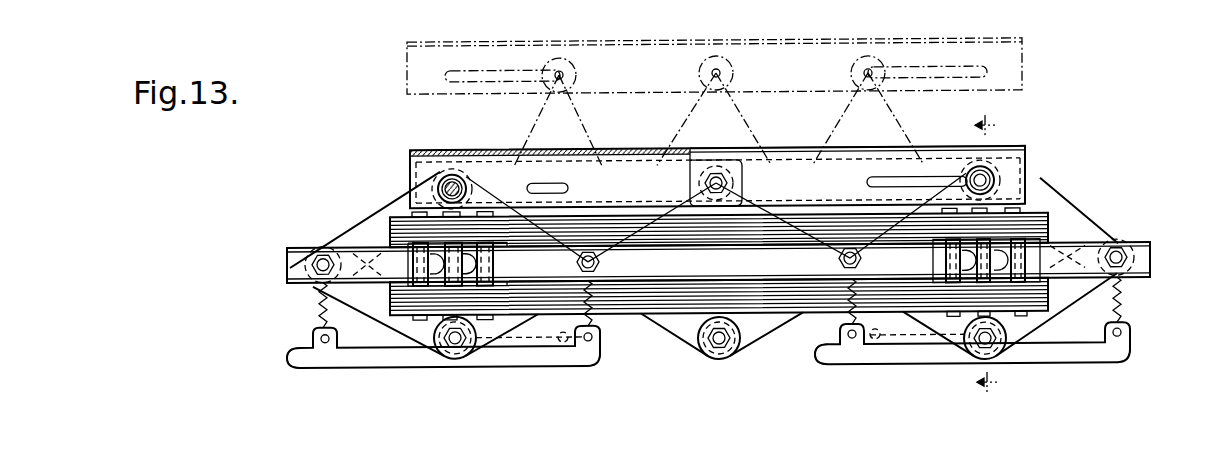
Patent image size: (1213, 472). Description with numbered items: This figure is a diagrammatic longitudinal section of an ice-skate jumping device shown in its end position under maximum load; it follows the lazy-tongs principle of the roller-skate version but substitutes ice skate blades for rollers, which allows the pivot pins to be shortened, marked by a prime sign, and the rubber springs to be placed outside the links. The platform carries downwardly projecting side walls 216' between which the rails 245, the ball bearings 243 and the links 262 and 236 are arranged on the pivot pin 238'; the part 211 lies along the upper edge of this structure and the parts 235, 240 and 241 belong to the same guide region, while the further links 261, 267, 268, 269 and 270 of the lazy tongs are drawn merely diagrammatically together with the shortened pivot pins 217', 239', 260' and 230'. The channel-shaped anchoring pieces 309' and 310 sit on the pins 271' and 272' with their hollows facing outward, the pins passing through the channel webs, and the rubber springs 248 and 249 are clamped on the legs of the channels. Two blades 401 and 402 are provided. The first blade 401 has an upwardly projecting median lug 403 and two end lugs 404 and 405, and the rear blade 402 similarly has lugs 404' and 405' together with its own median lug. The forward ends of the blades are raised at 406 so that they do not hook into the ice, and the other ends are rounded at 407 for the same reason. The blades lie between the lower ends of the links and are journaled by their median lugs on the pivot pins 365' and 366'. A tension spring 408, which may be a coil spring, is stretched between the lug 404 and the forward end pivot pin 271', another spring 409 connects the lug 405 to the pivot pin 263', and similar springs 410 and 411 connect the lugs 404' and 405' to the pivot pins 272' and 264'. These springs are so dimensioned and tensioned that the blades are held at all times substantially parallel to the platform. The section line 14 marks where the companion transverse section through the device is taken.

The section line 14- 14 is at (999, 253).
The hatched top edge of mounting plate 211 is at (650, 156).
The side walls 216' is at (840, 136).
The shortened pivot pin 217' is at (868, 119).
The shortened pivot pin 230' is at (718, 356).
The mounting plate 235 is at (717, 177).
The link 236 is at (852, 211).
The pivot pin 238' is at (1019, 170).
The shortened pivot pin 239' is at (442, 159).
The plate top edge 240 is at (914, 160).
The left slot 241 is at (525, 190).
The ball bearings 243 is at (461, 175).
The rails 245 is at (574, 161).
The rubber spring 248 is at (728, 254).
The rubber spring 249 is at (710, 298).
The shortened pivot pin 260' is at (716, 165).
The upper scissor links 261 is at (658, 196).
The link 262 is at (770, 162).
The pivot pin 263' is at (610, 267).
The pivot pin 264' is at (826, 264).
The left upper link 267 is at (363, 208).
The left lower link 268 is at (363, 316).
The right upper link 269 is at (1058, 203).
The right lower link 270 is at (1096, 311).
The forward end pivot pin 271' is at (323, 244).
The pivot pin 272' is at (1123, 235).
The channel-shaped anchoring piece 309' is at (696, 262).
The channel-shaped anchoring piece 310 is at (1151, 259).
The pivot pin 365' is at (453, 358).
The pivot pin 366' is at (966, 355).
The first blade 401 is at (394, 370).
The rear blade 402 is at (892, 371).
The median lug 403 is at (720, 334).
The end lug 404 is at (295, 331).
The end lug 404' is at (1141, 325).
The end lug 405 is at (613, 341).
The end lug 405' is at (818, 340).
The raised forward end 406 is at (300, 371).
The rounded end 407 is at (600, 363).
The tension spring 408 is at (320, 306).
The spring 409 is at (594, 322).
The spring 410 is at (1122, 312).
The spring 411 is at (846, 326).